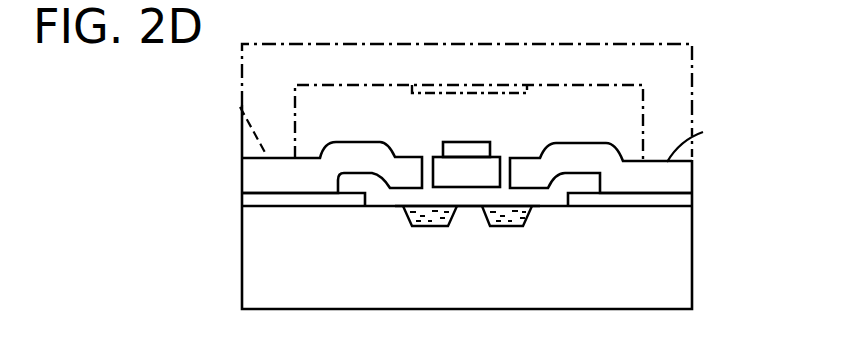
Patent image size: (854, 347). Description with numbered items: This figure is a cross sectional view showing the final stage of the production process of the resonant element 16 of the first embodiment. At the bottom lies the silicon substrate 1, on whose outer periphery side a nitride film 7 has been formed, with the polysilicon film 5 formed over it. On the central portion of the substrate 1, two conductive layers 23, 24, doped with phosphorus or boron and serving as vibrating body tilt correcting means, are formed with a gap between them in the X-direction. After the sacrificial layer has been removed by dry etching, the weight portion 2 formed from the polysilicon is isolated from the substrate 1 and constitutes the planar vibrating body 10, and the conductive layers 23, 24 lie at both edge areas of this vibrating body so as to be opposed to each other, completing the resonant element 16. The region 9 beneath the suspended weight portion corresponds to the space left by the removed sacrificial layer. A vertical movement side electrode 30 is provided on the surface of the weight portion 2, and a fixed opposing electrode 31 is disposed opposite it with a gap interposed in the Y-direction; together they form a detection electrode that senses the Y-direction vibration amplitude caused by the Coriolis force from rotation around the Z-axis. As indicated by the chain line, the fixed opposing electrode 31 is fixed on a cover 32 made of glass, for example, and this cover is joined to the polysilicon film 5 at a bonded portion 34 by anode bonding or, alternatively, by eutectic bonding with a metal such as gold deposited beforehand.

The silicon substrate 1 is at (682, 292).
The weight portion 2 is at (474, 168).
The polysilicon film 5 is at (250, 172).
The nitride film 7 is at (248, 198).
The channel region 9 is at (405, 197).
The planar vibrating body 10 is at (505, 158).
The resonant element 16 is at (722, 262).
The conductive layer 23 is at (427, 228).
The conductive layer 24 is at (510, 228).
The vertical movement side electrode 30 is at (462, 140).
The fixed opposing electrode 31 is at (417, 85).
The cover 32 is at (673, 72).
The bonded portion 34 is at (240, 107).